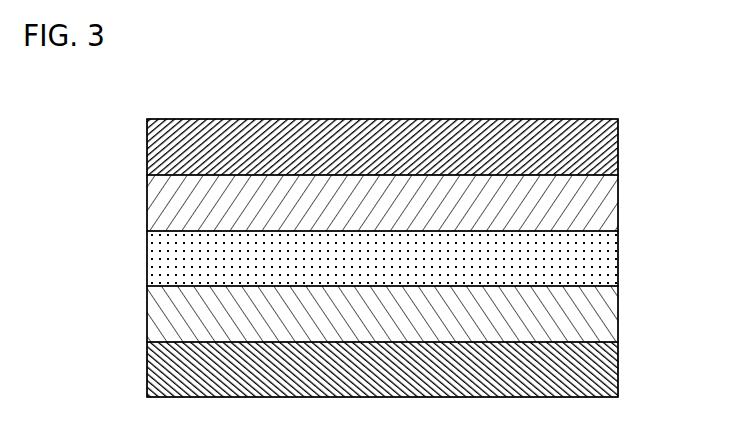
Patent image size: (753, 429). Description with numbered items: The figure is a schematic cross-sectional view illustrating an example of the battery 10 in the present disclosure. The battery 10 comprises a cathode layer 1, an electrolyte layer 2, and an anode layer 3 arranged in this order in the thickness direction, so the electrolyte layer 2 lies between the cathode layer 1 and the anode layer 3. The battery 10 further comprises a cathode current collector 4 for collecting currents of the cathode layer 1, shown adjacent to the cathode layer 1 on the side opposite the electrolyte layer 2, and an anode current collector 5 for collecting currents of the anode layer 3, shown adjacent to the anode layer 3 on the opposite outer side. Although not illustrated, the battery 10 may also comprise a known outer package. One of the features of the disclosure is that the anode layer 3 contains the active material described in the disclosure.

The battery 10 is at (592, 105).
The cathode current collector 4 is at (605, 148).
The cathode layer 1 is at (605, 202).
The electrolyte layer 2 is at (605, 257).
The anode layer 3 is at (605, 313).
The anode current collector 5 is at (605, 367).